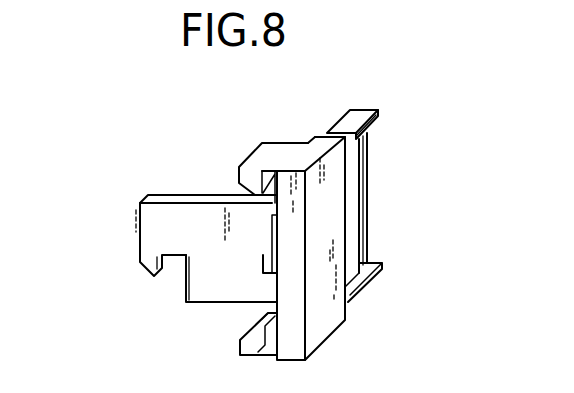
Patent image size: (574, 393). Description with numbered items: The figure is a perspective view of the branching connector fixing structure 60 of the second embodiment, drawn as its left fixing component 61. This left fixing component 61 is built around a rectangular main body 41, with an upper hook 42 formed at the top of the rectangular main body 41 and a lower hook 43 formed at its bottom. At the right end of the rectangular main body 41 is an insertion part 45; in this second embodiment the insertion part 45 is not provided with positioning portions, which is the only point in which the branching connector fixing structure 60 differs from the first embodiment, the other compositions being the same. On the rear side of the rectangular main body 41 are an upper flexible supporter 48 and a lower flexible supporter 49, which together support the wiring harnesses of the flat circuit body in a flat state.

The rectangular main body 41 is at (332, 320).
The upper hook 42 is at (247, 178).
The lower hook 43 is at (250, 336).
The insertion part 45 is at (362, 223).
The upper flexible supporter 48 is at (138, 230).
The lower flexible supporter 49 is at (185, 281).
The branching connector fixing structure 60 is at (189, 210).
The left fixing component 61 is at (320, 137).